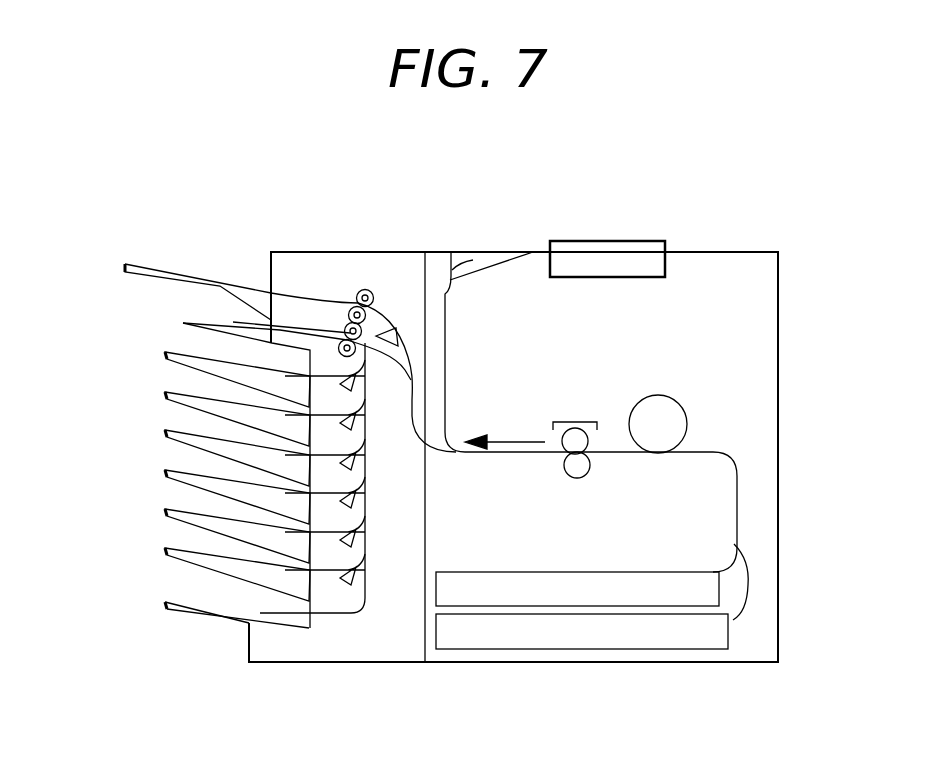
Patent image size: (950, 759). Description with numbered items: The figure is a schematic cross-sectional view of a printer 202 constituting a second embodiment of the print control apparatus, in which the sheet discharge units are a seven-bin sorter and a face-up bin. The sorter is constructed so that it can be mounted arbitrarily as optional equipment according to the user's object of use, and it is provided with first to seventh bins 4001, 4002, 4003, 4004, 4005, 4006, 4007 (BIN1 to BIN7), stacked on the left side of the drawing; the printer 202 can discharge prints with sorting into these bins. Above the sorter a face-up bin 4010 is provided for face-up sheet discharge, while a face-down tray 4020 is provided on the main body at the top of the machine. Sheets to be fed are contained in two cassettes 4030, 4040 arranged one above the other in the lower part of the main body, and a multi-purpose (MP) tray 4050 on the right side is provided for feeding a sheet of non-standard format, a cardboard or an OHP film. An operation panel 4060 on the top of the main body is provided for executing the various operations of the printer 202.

The printer 202 is at (692, 663).
The face-up bin 4010 is at (188, 278).
The face-down tray 4020 is at (488, 252).
The operation panel 4060 is at (630, 240).
The 1st bin 4001 is at (178, 353).
The 2nd bin 4002 is at (175, 394).
The 3rd bin 4003 is at (178, 433).
The 4th bin 4004 is at (175, 472).
The 5th bin 4005 is at (178, 512).
The 6th bin 4006 is at (175, 550).
The 7th bin 4007 is at (180, 602).
The cassette 4030 is at (632, 571).
The cassette 4040 is at (486, 650).
The multi-purpose (MP) tray 4050 is at (733, 453).